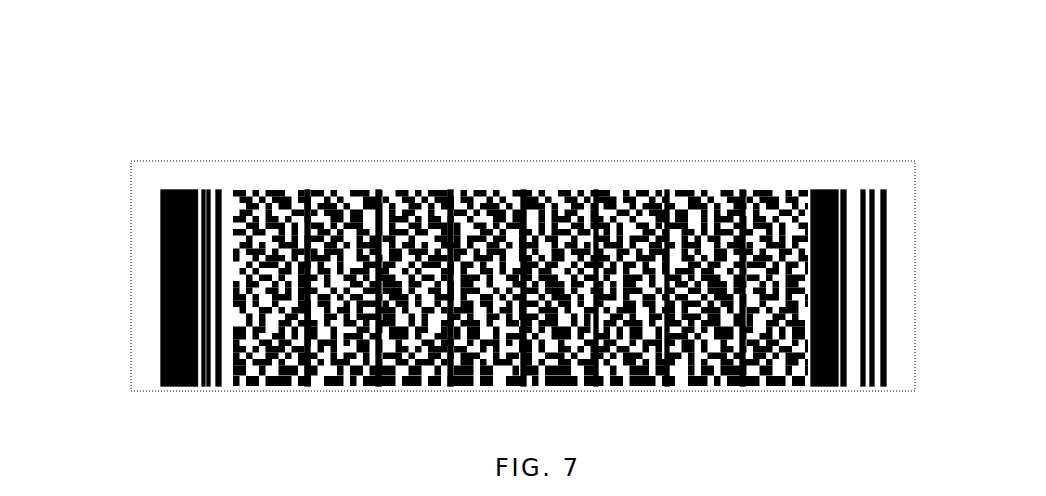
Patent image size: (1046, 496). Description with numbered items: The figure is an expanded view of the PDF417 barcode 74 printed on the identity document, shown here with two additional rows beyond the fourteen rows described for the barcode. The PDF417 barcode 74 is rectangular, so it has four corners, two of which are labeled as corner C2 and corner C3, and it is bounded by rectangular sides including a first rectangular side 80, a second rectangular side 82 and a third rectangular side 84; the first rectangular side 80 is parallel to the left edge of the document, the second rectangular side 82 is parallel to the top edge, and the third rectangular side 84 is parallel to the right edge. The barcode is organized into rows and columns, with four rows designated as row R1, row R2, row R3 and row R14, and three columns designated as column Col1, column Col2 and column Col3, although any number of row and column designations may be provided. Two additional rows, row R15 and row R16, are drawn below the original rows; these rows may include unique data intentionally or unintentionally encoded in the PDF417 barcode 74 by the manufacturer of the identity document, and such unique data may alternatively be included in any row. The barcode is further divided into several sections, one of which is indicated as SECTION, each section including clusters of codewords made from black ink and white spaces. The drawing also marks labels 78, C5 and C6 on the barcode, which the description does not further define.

The PDF417 barcode 74 is at (108, 75).
The left start bar pattern 78 is at (153, 252).
The first rectangular side 80 is at (452, 212).
The second rectangular side 82 is at (880, 266).
The third rectangular side 84 is at (405, 370).
The corner C2 is at (152, 183).
The corner C3 is at (877, 182).
The bottom-left corner C5 is at (153, 378).
The bottom-right corner C6 is at (877, 378).
The row R1 is at (153, 183).
The row R2 is at (225, 195).
The row R3 is at (225, 209).
The row R14 is at (225, 357).
The additional row R15 is at (225, 367).
The additional row R16 is at (98, 376).
The column Col1 is at (335, 210).
The column Col2 is at (341, 210).
The column Col3 is at (346, 210).
The section SECTION is at (659, 210).